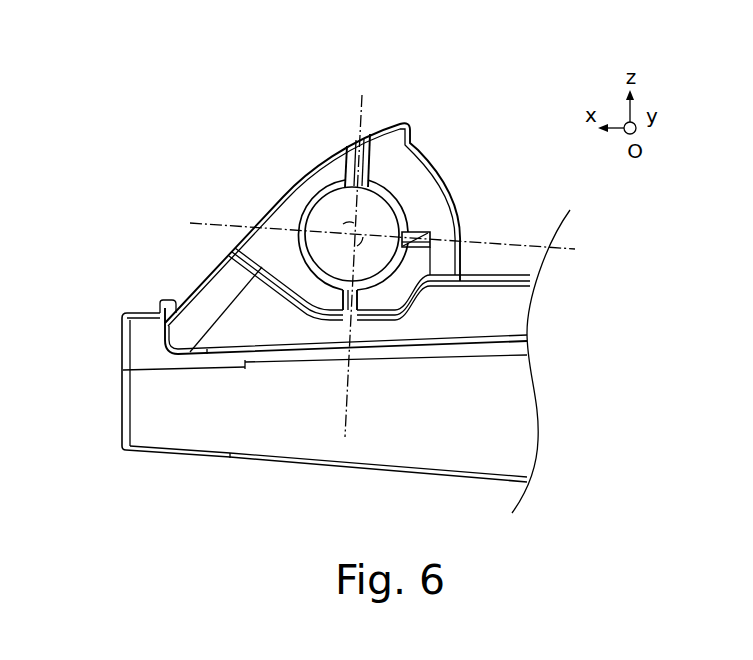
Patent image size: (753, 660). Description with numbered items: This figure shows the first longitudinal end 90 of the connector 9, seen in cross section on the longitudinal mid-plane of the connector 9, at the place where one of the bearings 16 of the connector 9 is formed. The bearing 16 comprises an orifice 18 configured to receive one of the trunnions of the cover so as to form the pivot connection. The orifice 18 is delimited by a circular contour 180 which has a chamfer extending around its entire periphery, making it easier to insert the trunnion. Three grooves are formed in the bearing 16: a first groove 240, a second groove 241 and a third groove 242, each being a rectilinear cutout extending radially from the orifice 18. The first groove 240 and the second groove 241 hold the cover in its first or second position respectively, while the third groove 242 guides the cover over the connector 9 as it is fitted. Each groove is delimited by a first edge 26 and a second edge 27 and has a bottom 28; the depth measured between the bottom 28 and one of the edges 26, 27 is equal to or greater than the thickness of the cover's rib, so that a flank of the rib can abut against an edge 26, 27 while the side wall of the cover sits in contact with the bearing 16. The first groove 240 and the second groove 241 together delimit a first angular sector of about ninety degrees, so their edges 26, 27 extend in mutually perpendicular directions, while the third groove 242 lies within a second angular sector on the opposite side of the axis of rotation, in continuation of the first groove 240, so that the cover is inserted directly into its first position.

The connector 9 is at (142, 304).
The first longitudinal end 90 is at (150, 211).
The bearing 16 is at (276, 214).
The orifice 18 is at (328, 215).
The circular contour 180 is at (400, 211).
The bottom 28 is at (344, 155).
The third groove 242 is at (359, 152).
The first edge 26 is at (407, 125).
The second edge 27 is at (337, 164).
The second groove 241 is at (430, 238).
The first groove 240 is at (340, 318).